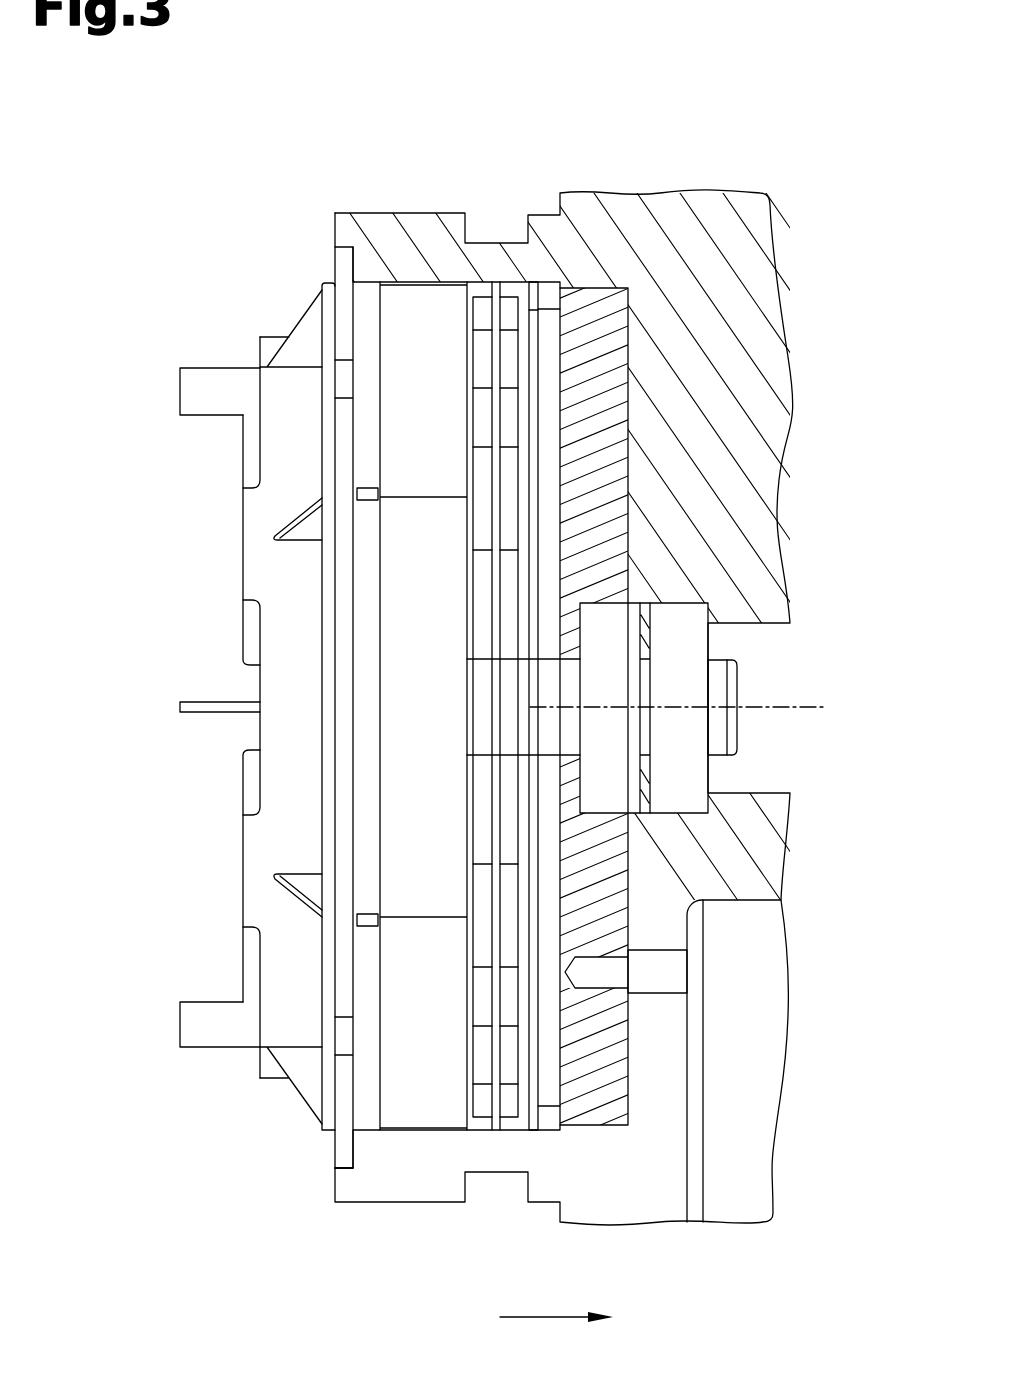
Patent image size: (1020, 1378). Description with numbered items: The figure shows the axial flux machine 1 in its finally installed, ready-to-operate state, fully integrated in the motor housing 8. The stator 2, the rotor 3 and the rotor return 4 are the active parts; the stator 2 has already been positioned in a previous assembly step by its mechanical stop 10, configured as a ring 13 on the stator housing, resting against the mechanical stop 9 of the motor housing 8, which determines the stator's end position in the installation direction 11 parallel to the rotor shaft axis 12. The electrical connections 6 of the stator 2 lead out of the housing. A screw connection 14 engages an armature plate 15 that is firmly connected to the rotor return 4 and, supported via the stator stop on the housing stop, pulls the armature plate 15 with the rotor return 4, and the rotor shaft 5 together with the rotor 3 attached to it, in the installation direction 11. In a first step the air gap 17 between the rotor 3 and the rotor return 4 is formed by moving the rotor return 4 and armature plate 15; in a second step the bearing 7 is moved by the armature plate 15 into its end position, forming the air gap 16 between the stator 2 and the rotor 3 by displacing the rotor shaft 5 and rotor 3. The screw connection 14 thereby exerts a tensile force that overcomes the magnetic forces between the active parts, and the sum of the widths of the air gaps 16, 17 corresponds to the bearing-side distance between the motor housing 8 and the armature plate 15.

The axial flux machine 1 is at (224, 266).
The stator 2 is at (402, 257).
The rotor 3 is at (515, 303).
The rotor return 4 is at (543, 420).
The rotor shaft 5 is at (722, 737).
The electrical connections 6 is at (187, 398).
The bearings 7 is at (677, 624).
The motor housing 8 is at (432, 243).
The mechanical stop 9 is at (350, 1137).
The mechanical stop 10 is at (356, 1152).
The installation direction 11 is at (558, 1313).
The rotor shaft axis 12 is at (821, 703).
The ring 13 is at (348, 283).
The screw connection 14 is at (598, 973).
The armature plate 15 is at (595, 310).
The air gap 16 is at (477, 275).
The air gap 17 is at (527, 290).